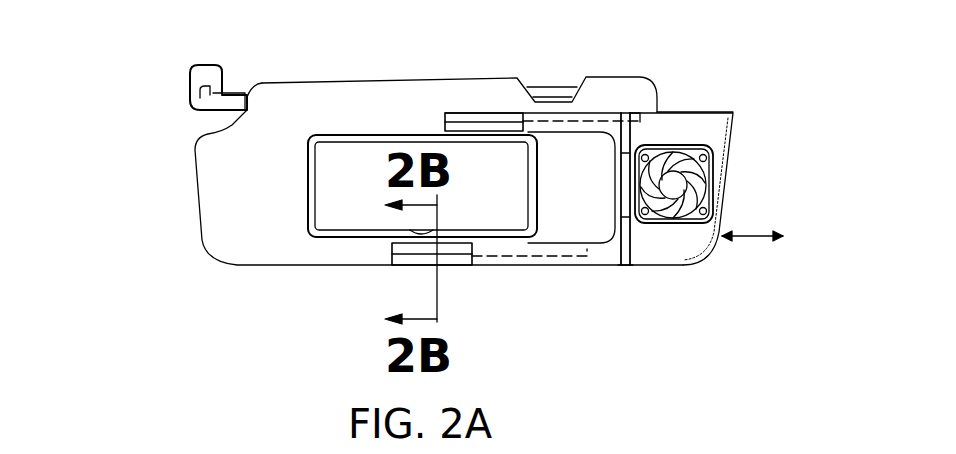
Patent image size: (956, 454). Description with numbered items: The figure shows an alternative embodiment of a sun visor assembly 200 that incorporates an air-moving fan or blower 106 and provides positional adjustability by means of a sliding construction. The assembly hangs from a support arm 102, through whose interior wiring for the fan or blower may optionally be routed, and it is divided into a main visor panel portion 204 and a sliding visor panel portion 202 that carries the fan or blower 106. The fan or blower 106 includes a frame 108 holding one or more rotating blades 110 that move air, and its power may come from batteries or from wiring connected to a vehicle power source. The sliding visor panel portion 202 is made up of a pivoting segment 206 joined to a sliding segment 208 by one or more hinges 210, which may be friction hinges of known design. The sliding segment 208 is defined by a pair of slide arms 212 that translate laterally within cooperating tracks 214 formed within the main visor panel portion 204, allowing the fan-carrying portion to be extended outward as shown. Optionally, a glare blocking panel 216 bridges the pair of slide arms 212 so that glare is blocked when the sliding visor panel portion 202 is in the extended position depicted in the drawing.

The sun visor assembly 200 is at (145, 118).
The support arm 102 is at (230, 103).
The main visor panel portion 204 is at (200, 210).
The tracks 214 is at (478, 112).
The slide arms 212 is at (553, 118).
The sliding segment 208 is at (577, 258).
The glare blocking panel 216 is at (593, 228).
The hinges 210 is at (633, 114).
The pivoting segment 206 is at (683, 112).
The frame 108 is at (697, 146).
The fan or blower 106 is at (718, 178).
The rotating blades 110 is at (683, 187).
The sliding visor panel portion 202 is at (628, 275).